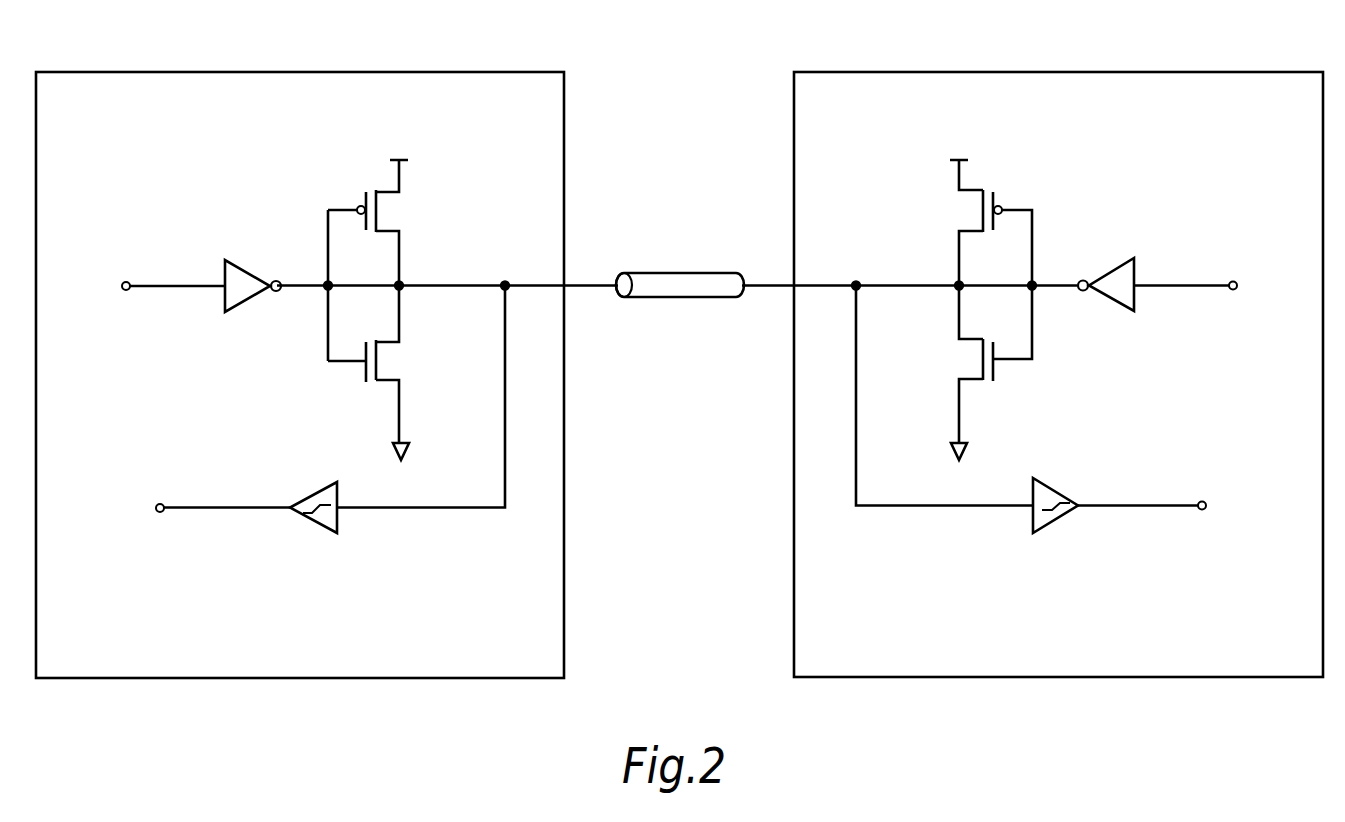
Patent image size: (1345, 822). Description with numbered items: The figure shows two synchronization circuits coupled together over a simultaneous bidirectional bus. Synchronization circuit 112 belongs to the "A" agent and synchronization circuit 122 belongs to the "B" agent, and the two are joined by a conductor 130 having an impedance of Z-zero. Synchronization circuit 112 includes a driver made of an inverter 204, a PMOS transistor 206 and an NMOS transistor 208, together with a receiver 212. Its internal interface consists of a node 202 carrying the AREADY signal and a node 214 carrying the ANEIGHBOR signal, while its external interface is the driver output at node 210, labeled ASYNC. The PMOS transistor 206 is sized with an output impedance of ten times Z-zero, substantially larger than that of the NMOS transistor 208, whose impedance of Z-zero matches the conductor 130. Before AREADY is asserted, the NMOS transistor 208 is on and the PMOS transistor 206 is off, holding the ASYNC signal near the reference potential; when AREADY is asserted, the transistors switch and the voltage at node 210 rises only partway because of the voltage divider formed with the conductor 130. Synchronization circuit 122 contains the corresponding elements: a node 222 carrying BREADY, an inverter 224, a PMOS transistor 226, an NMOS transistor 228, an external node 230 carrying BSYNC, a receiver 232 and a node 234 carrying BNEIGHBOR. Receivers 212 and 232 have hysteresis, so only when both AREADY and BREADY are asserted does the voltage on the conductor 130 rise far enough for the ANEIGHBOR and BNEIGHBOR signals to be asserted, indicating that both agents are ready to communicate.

The synchronization circuit 112 is at (462, 72).
The synchronization circuit 122 is at (898, 72).
The conductor 130 is at (682, 297).
The node 202 is at (126, 282).
The inverter 204 is at (225, 272).
The PMOS transistor 206 is at (372, 190).
The NMOS transistor 208 is at (372, 383).
The node 210 is at (503, 290).
The receiver 212 is at (321, 527).
The node 214 is at (161, 504).
The node 222 is at (1233, 281).
The inverter 224 is at (1135, 268).
The PMOS transistor 226 is at (988, 190).
The NMOS transistor 228 is at (988, 383).
The node 230 is at (858, 290).
The receiver 232 is at (1055, 525).
The node 234 is at (1199, 502).